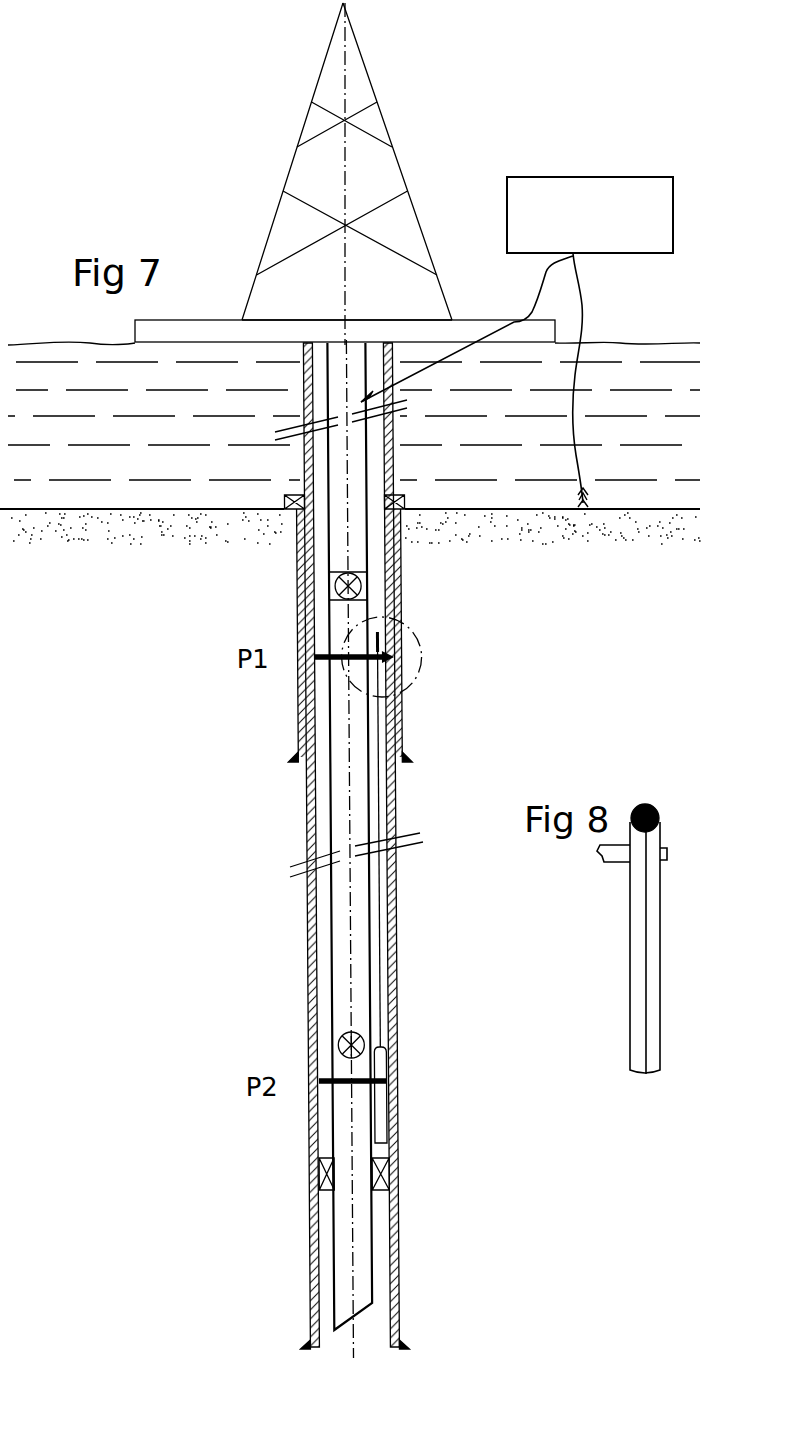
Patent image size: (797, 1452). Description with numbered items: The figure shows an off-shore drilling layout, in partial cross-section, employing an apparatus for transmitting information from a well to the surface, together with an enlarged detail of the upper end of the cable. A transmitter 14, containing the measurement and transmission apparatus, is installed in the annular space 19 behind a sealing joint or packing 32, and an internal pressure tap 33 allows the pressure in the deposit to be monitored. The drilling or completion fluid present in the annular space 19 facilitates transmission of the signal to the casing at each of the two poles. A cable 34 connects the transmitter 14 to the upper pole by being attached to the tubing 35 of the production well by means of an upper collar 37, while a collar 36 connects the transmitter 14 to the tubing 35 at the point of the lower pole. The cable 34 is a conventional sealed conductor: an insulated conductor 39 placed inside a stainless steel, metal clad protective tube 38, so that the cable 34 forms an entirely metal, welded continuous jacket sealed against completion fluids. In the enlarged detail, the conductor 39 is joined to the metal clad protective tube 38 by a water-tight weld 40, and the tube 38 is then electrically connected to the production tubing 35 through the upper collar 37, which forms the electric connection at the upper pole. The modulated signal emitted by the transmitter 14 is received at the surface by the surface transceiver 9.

In FIG. 7, the surface transceiver 9 is at (675, 229).
In FIG. 7, the transmitter 14 is at (372, 1130).
In FIG. 7, the annular space 19 is at (372, 990).
In FIG. 7, the sealing joint or packing 32 is at (312, 1165).
In FIG. 7, the internal pressure tap 33 is at (366, 1158).
In FIG. 7, the cable 34 is at (382, 932).
In FIG. 7, the tubing 35 is at (326, 818).
In FIG. 7, the collar 36 is at (380, 1081).
In FIG. 7, the upper collar 37 is at (388, 655).
In FIG. 8, the upper collar 37 is at (668, 854).
In FIG. 8, the metal clad protective tube 38 is at (660, 937).
In FIG. 8, the insulated conductor 39 is at (647, 900).
In FIG. 8, the water-tight weld 40 is at (656, 823).